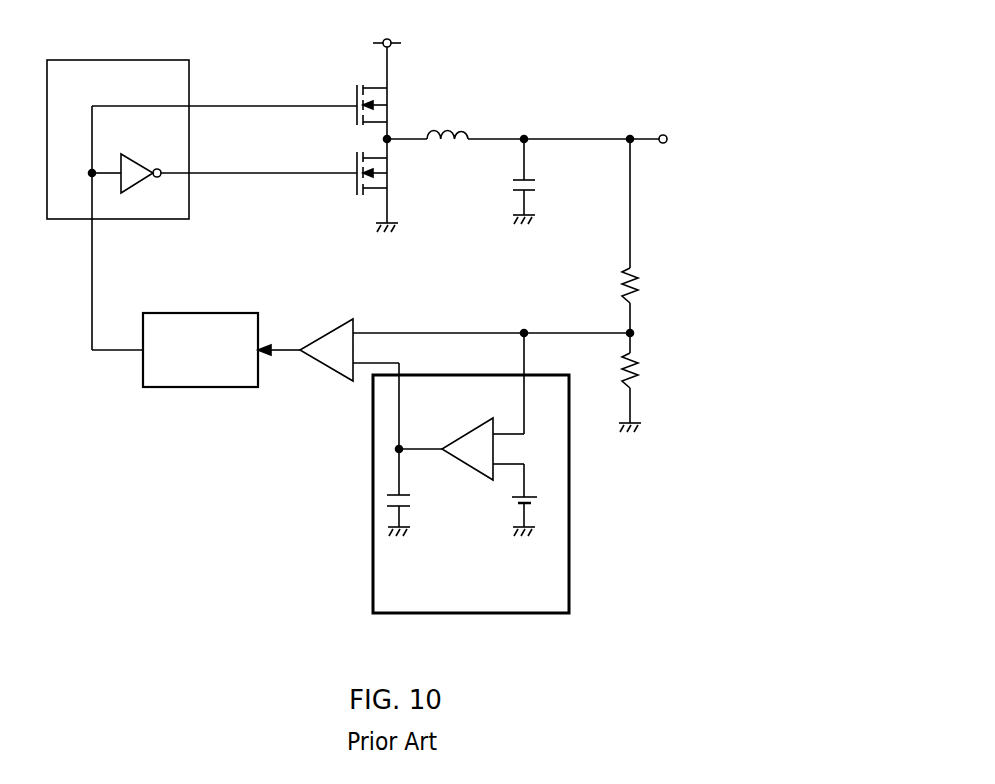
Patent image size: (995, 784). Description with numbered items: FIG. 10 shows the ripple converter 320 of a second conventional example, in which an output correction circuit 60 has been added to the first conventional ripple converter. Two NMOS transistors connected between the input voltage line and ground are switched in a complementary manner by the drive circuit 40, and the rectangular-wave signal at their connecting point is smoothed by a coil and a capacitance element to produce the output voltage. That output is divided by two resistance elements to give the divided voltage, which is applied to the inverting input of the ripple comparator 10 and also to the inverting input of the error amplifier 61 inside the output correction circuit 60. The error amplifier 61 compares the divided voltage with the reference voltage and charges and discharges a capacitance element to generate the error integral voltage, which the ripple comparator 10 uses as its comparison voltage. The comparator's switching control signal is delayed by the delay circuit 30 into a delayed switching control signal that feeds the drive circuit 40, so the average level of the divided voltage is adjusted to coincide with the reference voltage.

The drive circuit 40 is at (152, 60).
The ripple converter 320 is at (572, 80).
The delay circuit 30 is at (205, 313).
The ripple comparator 10 is at (323, 328).
The error amplifier 61 is at (467, 433).
The output correction circuit 60 is at (505, 473).